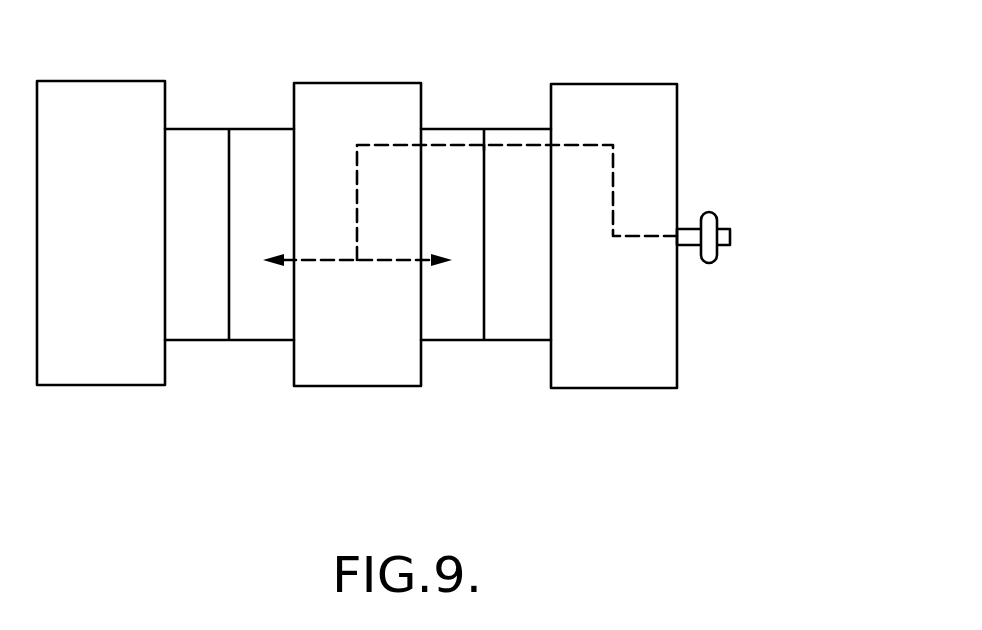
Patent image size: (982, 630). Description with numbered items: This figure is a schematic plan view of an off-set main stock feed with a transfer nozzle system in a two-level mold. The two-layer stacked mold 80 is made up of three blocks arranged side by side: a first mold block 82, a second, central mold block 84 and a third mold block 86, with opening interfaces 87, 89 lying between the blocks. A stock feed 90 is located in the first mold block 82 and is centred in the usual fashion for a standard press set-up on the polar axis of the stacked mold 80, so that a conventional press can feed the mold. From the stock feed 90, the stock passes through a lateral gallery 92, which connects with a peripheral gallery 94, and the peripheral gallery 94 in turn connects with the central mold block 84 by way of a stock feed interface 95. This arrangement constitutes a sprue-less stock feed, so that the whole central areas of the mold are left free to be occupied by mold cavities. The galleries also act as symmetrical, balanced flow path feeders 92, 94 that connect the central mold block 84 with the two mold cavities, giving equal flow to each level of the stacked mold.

The 2-layer stacked mold 80 is at (600, 38).
The first mold block 82 is at (628, 390).
The central mold block 84 is at (360, 388).
The third mold block 86 is at (80, 386).
The opening interface 87 is at (483, 336).
The opening interface 89 is at (229, 341).
The stock feed 90 is at (690, 230).
The lateral gallery 92 is at (613, 163).
The peripheral gallery 94 is at (387, 143).
The stock feed interface 95 is at (484, 145).